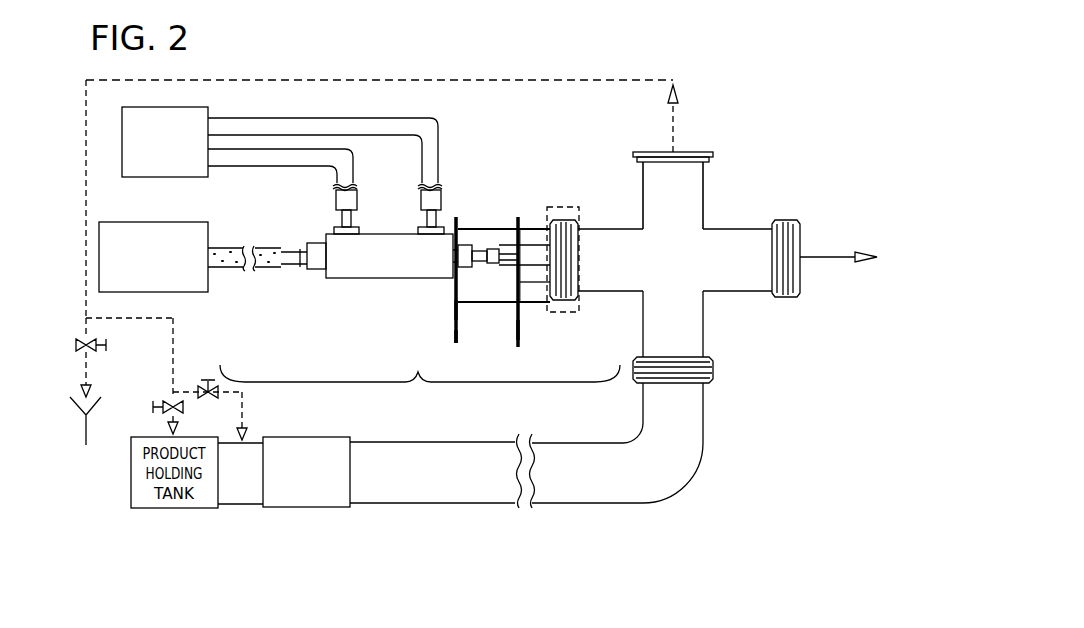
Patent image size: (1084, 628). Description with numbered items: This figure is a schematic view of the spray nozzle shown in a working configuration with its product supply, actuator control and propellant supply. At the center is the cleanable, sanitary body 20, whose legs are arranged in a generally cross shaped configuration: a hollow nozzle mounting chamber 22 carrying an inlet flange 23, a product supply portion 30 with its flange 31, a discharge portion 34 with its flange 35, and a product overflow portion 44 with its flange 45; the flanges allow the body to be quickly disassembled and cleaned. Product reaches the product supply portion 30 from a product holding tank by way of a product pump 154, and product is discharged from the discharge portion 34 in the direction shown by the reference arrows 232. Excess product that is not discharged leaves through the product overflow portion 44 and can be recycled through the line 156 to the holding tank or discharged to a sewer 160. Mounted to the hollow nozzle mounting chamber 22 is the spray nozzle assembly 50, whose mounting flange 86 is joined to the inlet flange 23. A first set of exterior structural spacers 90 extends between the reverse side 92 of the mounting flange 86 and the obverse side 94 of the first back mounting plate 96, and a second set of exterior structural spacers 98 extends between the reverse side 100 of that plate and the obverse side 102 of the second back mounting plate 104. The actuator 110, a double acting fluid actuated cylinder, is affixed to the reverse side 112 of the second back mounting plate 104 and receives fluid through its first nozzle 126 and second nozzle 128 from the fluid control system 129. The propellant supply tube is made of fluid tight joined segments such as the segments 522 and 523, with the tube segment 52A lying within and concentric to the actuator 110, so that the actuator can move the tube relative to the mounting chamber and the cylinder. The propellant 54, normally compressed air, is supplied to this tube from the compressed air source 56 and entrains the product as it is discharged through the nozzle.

The body 20 is at (673, 259).
The hollow nozzle mounting chamber 22 is at (600, 290).
The inlet flange 23 is at (563, 218).
The product supply portion 30 is at (703, 334).
The flange 31 is at (633, 368).
The discharge portion 34 is at (735, 232).
The flange 35 is at (783, 220).
The product overflow portion 44 is at (703, 185).
The flange 45 is at (713, 155).
The spray nozzle assembly 50 is at (420, 387).
The tube segment 52A is at (300, 265).
The propellant supply tube segment 522 is at (485, 245).
The propellant supply tube segment 523 is at (291, 248).
The propellant 54 is at (227, 248).
The compressed air source 56 is at (163, 222).
The mounting flange 86 is at (549, 232).
The first set of exterior structural spacers 90 is at (524, 230).
The reverse side of mounting flange 92 is at (458, 271).
The obverse side of first back mounting plate 94 is at (520, 333).
The first back mounting plate 96 is at (520, 348).
The second set of exterior structural spacers 98 is at (497, 229).
The reverse side of first back mounting plate 100 is at (516, 288).
The obverse side of second back mounting plate 102 is at (457, 337).
The second back mounting plate 104 is at (453, 341).
The actuator 110 is at (389, 256).
The reverse side of second back mounting plate 112 is at (453, 318).
The first nozzle 126 is at (356, 224).
The second nozzle 128 is at (420, 219).
The fluid control system 129 is at (150, 177).
The product pump 154 is at (307, 437).
The line 156 is at (673, 113).
The sewer 160 is at (86, 432).
The reference arrows 232 is at (832, 258).